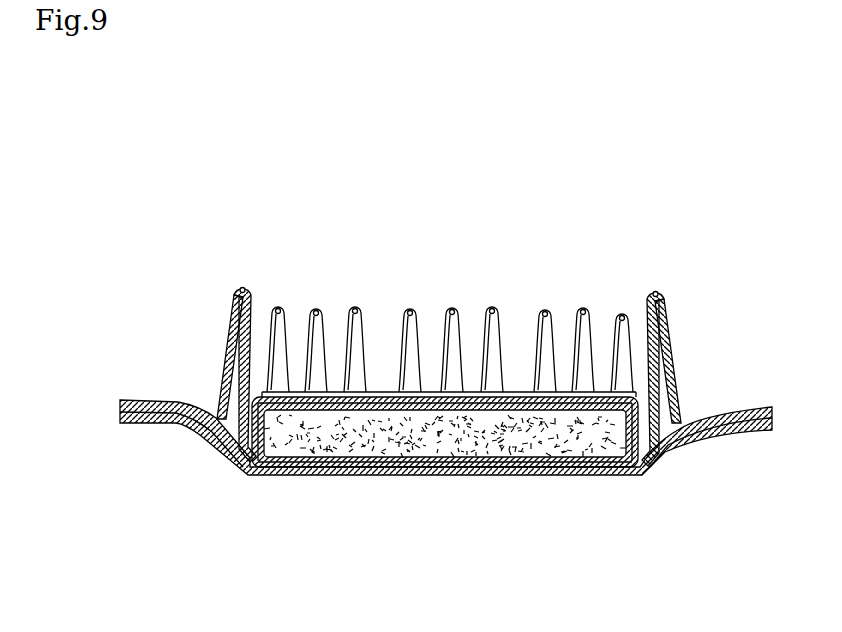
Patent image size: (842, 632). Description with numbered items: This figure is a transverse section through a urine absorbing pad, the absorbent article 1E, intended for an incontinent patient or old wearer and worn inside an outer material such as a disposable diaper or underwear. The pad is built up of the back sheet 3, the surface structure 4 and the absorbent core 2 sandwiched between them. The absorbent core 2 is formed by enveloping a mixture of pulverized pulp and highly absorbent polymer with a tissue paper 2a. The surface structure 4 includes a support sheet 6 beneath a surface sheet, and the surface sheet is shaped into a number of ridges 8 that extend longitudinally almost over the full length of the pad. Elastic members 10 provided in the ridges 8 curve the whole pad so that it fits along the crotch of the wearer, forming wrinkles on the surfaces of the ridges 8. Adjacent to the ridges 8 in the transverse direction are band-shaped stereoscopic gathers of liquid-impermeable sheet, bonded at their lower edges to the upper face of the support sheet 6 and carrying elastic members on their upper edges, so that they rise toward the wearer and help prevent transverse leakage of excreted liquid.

The absorbent article 1E is at (125, 236).
The absorbent core 2 is at (330, 461).
The tissue paper 2a is at (523, 475).
The back sheet 3 is at (417, 473).
The surface structure 4 is at (527, 292).
The support sheet 6 is at (386, 391).
The ridges 8 is at (437, 303).
The elastic members 10 is at (280, 302).